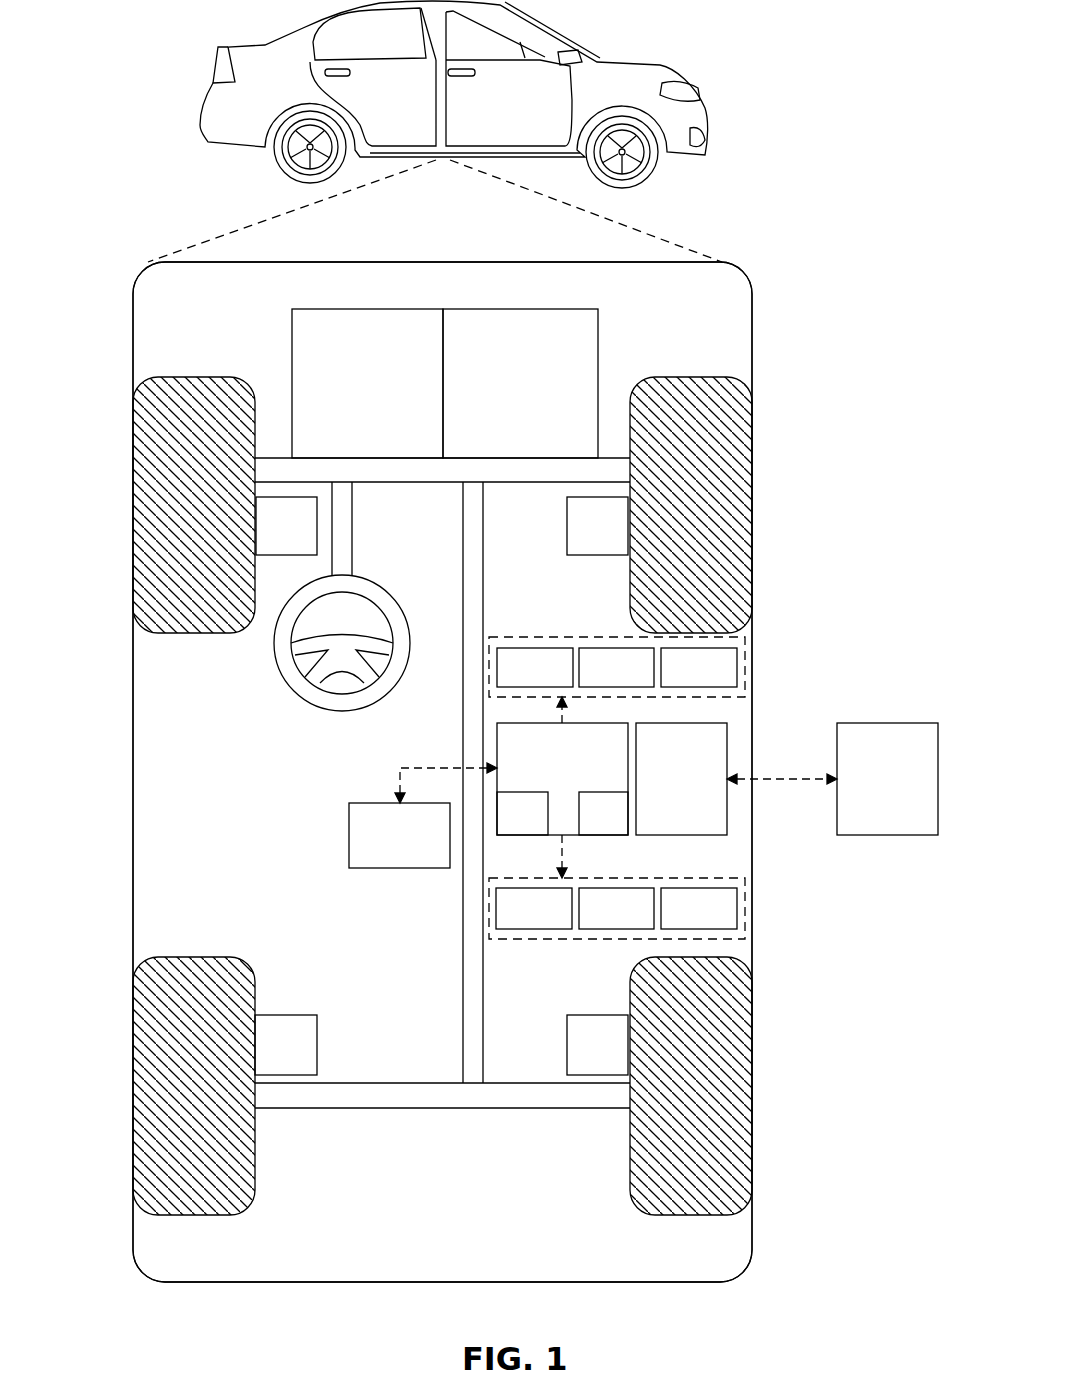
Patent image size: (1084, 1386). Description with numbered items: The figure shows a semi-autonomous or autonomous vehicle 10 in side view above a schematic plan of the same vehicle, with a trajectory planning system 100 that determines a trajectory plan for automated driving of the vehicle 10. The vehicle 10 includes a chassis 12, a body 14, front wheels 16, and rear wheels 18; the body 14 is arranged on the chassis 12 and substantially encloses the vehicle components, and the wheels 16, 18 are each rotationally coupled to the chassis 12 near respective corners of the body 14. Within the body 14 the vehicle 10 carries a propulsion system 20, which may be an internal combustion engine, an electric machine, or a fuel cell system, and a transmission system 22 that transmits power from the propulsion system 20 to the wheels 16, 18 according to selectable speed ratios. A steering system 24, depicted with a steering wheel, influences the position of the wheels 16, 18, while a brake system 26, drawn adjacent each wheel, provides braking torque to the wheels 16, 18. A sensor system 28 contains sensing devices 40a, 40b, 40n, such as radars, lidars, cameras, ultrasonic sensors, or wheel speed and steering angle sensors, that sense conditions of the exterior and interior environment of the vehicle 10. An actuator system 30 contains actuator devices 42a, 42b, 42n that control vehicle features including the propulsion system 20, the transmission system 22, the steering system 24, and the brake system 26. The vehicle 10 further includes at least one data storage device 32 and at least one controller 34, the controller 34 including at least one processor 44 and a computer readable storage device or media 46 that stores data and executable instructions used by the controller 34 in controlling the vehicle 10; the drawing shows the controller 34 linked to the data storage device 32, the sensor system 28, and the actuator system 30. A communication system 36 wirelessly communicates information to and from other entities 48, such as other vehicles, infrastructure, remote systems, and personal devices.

The vehicle 10 is at (205, 78).
The trajectory planning system 100 is at (782, 278).
The chassis 12 is at (462, 973).
The body 14 is at (133, 733).
The front wheels 16 is at (190, 377).
The rear wheels 18 is at (193, 1215).
The propulsion system 20 is at (353, 401).
The transmission system 22 is at (506, 401).
The steering system 24 is at (366, 555).
The brake system 26 is at (272, 542).
The sensor system 28 is at (578, 637).
The actuator system 30 is at (583, 940).
The data storage device 32 is at (385, 854).
The controller 34 is at (548, 776).
The communication system 36 is at (667, 796).
The sensing device 40a is at (514, 684).
The sensing device 40b is at (595, 684).
The sensing device 40n is at (678, 684).
The actuator device 42a is at (513, 925).
The actuator device 42b is at (595, 925).
The actuator device 42n is at (678, 925).
The processor 44 is at (508, 831).
The computer readable storage device or media 46 is at (589, 831).
The other entities 48 is at (873, 796).